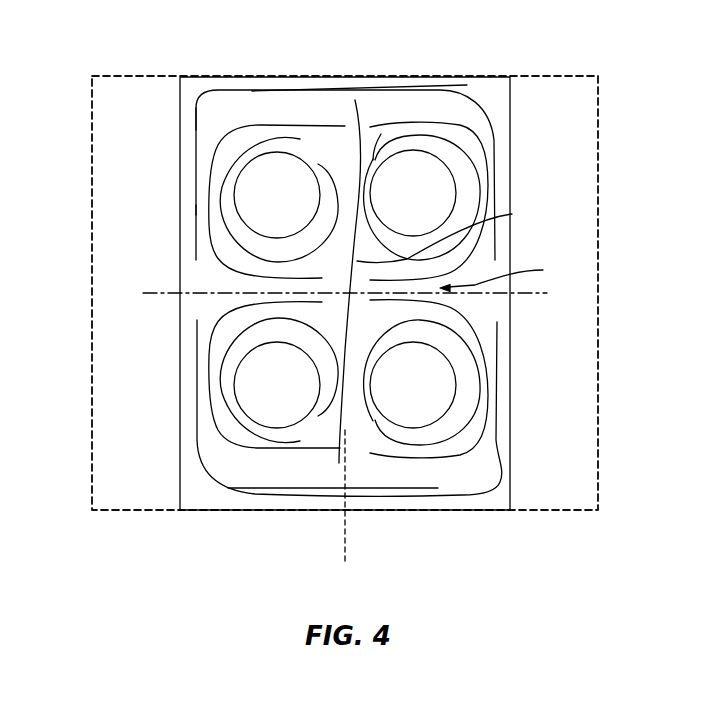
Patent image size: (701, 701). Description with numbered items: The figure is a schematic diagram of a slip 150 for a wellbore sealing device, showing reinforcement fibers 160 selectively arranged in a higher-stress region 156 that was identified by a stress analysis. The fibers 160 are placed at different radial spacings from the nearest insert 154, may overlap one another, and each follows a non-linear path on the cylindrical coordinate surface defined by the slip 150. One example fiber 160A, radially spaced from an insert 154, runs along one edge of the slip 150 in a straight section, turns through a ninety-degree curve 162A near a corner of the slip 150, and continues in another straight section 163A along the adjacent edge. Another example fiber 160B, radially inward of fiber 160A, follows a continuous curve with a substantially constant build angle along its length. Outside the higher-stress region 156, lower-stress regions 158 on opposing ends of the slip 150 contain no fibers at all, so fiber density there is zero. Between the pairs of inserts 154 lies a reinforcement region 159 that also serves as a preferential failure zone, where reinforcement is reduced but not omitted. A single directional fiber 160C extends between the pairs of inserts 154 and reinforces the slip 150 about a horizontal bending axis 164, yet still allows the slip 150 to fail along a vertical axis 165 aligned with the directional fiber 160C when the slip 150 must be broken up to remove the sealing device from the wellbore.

The slip 150 is at (616, 112).
The insert 154 is at (423, 172).
The higher-stress region 156 is at (441, 76).
The lower-stress region 158 is at (596, 367).
The reinforcement region 159 is at (511, 275).
The reinforcement fibers 160 is at (223, 135).
The fiber 160A is at (197, 206).
The fiber 160B is at (261, 257).
The directional fiber 160C is at (512, 214).
The 90-degree curve 162A is at (192, 121).
The straight section 163A is at (271, 86).
The horizontal bending axis 164 is at (171, 292).
The vertical axis 165 is at (345, 540).